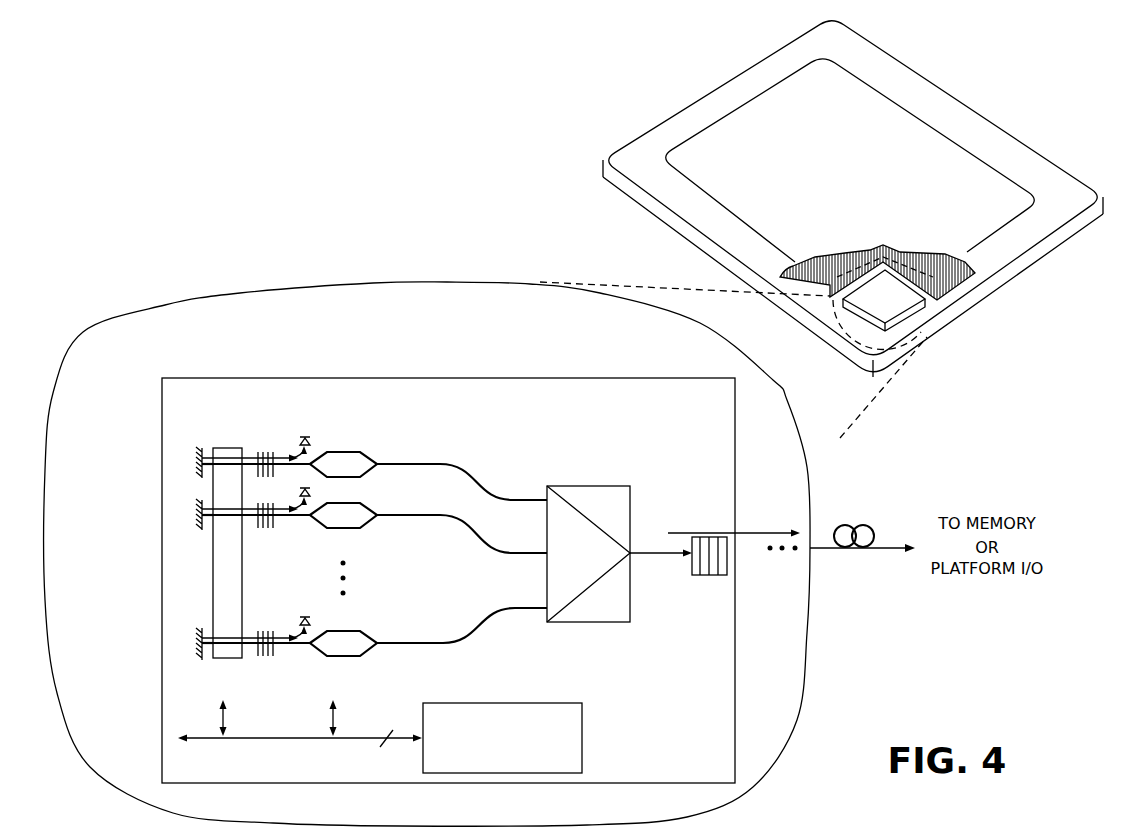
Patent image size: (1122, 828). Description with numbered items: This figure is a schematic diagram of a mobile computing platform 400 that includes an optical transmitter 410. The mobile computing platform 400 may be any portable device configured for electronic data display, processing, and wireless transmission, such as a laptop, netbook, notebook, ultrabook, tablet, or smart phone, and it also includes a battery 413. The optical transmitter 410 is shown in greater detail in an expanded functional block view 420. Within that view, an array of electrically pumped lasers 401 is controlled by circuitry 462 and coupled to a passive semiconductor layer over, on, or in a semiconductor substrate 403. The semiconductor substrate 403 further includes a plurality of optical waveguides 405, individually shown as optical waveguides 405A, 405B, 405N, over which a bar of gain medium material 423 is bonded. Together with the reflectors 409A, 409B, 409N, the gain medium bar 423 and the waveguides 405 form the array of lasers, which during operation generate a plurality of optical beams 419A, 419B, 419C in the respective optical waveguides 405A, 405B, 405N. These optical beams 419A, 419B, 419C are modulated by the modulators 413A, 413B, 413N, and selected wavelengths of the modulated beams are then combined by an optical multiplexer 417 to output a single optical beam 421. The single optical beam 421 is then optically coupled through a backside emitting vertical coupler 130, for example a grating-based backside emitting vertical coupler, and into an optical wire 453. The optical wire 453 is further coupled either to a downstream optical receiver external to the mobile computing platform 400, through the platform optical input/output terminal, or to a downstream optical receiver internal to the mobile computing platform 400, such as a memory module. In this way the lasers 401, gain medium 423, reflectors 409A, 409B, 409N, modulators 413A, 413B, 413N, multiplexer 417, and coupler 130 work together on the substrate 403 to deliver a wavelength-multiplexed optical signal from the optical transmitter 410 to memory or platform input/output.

The mobile computing platform 400 is at (486, 166).
The electrically pumped lasers 401 is at (227, 430).
The semiconductor substrate 403 is at (164, 377).
The substrate 405 is at (838, 186).
The optical waveguide 405A is at (443, 463).
The optical waveguide 405B is at (483, 547).
The optical waveguide 405N is at (470, 633).
The reflector 409A is at (273, 453).
The reflector 409B is at (260, 530).
The reflector 409N is at (268, 624).
The optical transmitter 410 is at (871, 307).
The battery 413 is at (957, 277).
The modulator 413A is at (362, 450).
The modulator 413B is at (337, 530).
The modulator 413N is at (372, 657).
The optical multiplexer 417 is at (578, 485).
The optical beam 419A is at (255, 455).
The optical beam 419B is at (259, 514).
The optical beam 419C is at (250, 655).
The expanded functional block view 420 is at (165, 305).
The single optical beam 421 is at (677, 530).
The bar of gain medium material 423 is at (215, 448).
The optical wire 453 is at (855, 515).
The circuitry 462 is at (583, 725).
The backside emitting vertical coupler 130 is at (697, 577).